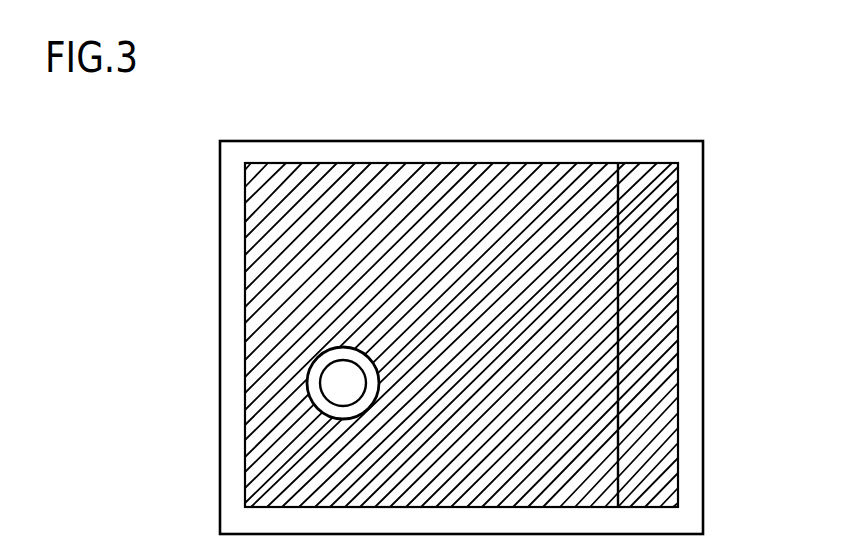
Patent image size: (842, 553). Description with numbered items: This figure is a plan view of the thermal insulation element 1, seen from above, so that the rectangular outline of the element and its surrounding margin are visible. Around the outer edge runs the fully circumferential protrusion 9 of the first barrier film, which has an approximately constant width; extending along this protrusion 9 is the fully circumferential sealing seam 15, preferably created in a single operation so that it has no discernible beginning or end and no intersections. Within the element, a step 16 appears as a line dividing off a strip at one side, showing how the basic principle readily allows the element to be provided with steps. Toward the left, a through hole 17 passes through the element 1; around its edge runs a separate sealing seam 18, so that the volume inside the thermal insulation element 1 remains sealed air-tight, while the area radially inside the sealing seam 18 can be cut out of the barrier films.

The thermal insulation element 1 is at (620, 98).
The protrusion 9 is at (230, 242).
The sealing seam 15 is at (690, 273).
The step 16 is at (640, 362).
The through hole 17 is at (333, 388).
The sealing seam 18 is at (320, 365).